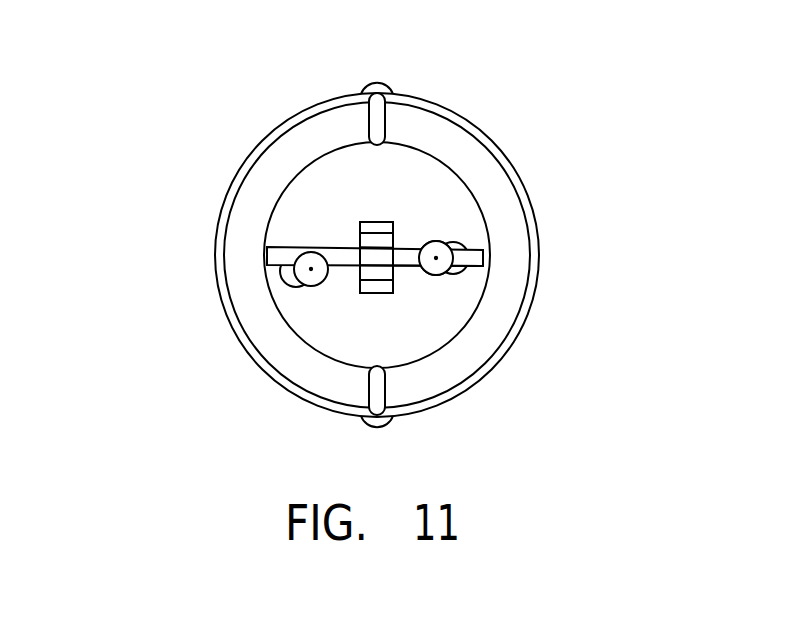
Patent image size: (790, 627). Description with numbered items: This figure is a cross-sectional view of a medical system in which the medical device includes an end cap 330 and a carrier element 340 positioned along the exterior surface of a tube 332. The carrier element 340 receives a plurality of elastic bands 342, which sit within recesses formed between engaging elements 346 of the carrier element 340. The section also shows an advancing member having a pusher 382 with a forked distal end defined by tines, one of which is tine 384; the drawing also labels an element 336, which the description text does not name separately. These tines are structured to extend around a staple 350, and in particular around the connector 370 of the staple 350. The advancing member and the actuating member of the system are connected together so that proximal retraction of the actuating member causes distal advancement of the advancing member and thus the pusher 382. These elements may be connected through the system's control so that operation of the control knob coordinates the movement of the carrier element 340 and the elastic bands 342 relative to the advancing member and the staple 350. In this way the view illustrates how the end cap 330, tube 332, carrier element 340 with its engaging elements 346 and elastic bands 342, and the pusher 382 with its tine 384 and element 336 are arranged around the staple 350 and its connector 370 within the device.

The end cap 330 is at (245, 312).
The tube 332 is at (377, 255).
The guide slot 336 is at (376, 256).
The carrier element 340 is at (387, 123).
The elastic bands 342 is at (290, 115).
The engaging elements 346 is at (386, 426).
The staple 350 is at (422, 248).
The connector 370 is at (402, 268).
The pusher 382 is at (360, 243).
The tine 384 is at (365, 222).